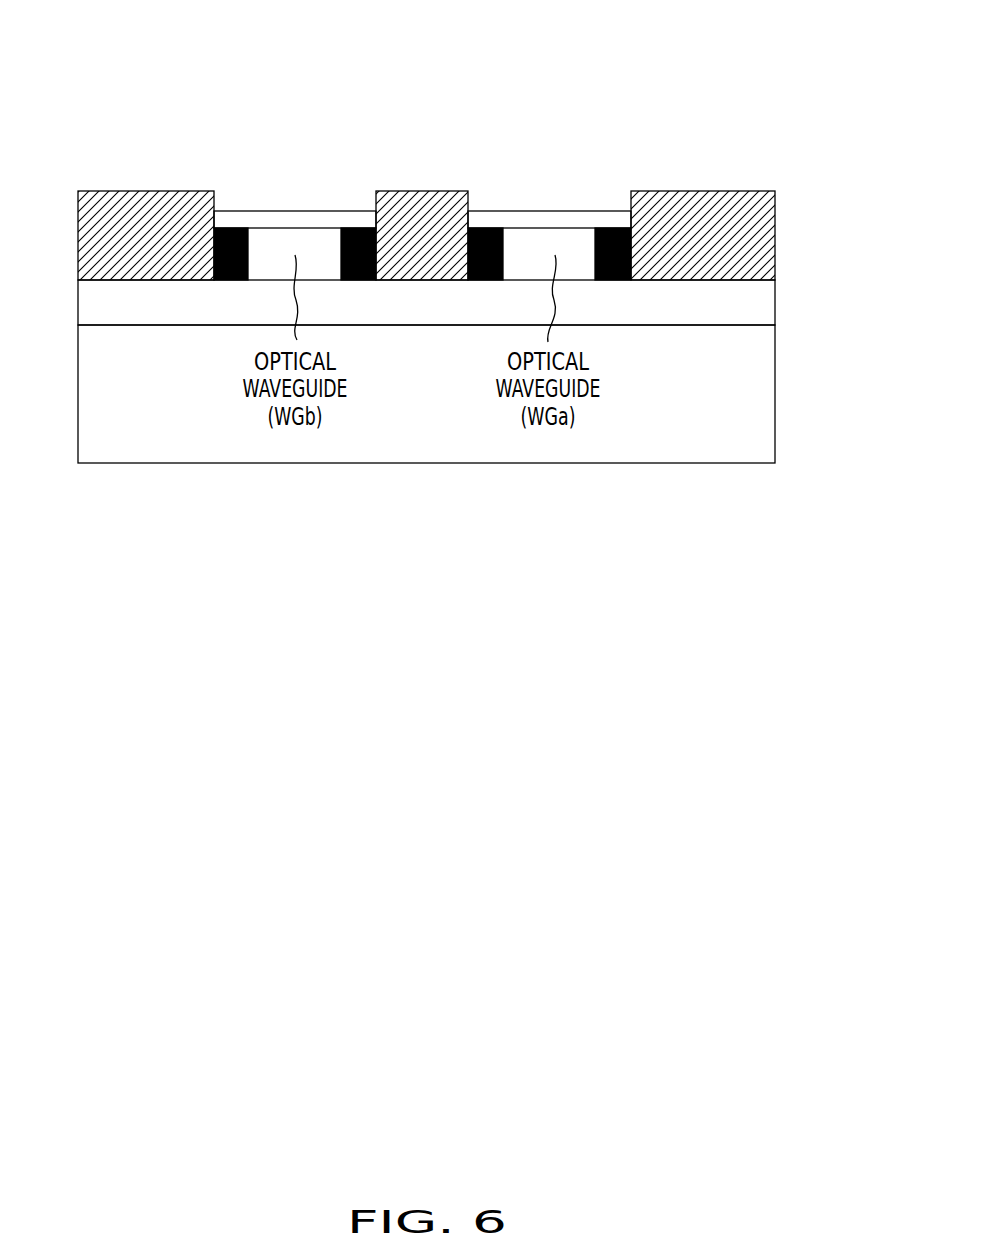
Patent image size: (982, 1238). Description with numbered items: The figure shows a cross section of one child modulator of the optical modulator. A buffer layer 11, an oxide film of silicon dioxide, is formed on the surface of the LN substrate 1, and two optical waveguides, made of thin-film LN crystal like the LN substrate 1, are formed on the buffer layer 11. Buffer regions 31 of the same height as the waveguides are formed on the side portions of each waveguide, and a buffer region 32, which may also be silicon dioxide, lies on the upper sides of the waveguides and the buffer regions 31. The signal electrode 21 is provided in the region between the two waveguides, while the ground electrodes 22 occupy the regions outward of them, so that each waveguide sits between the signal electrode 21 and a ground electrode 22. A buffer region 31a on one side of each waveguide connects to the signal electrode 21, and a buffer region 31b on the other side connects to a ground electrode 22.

The LN substrate 1 is at (775, 395).
The buffer layer 11 is at (775, 303).
The signal electrode 21 is at (418, 192).
The ground electrode 22 is at (108, 192).
The buffer region 31 is at (417, 218).
The buffer region 31a is at (356, 228).
The buffer region 31b is at (231, 228).
The buffer region 32 is at (284, 211).